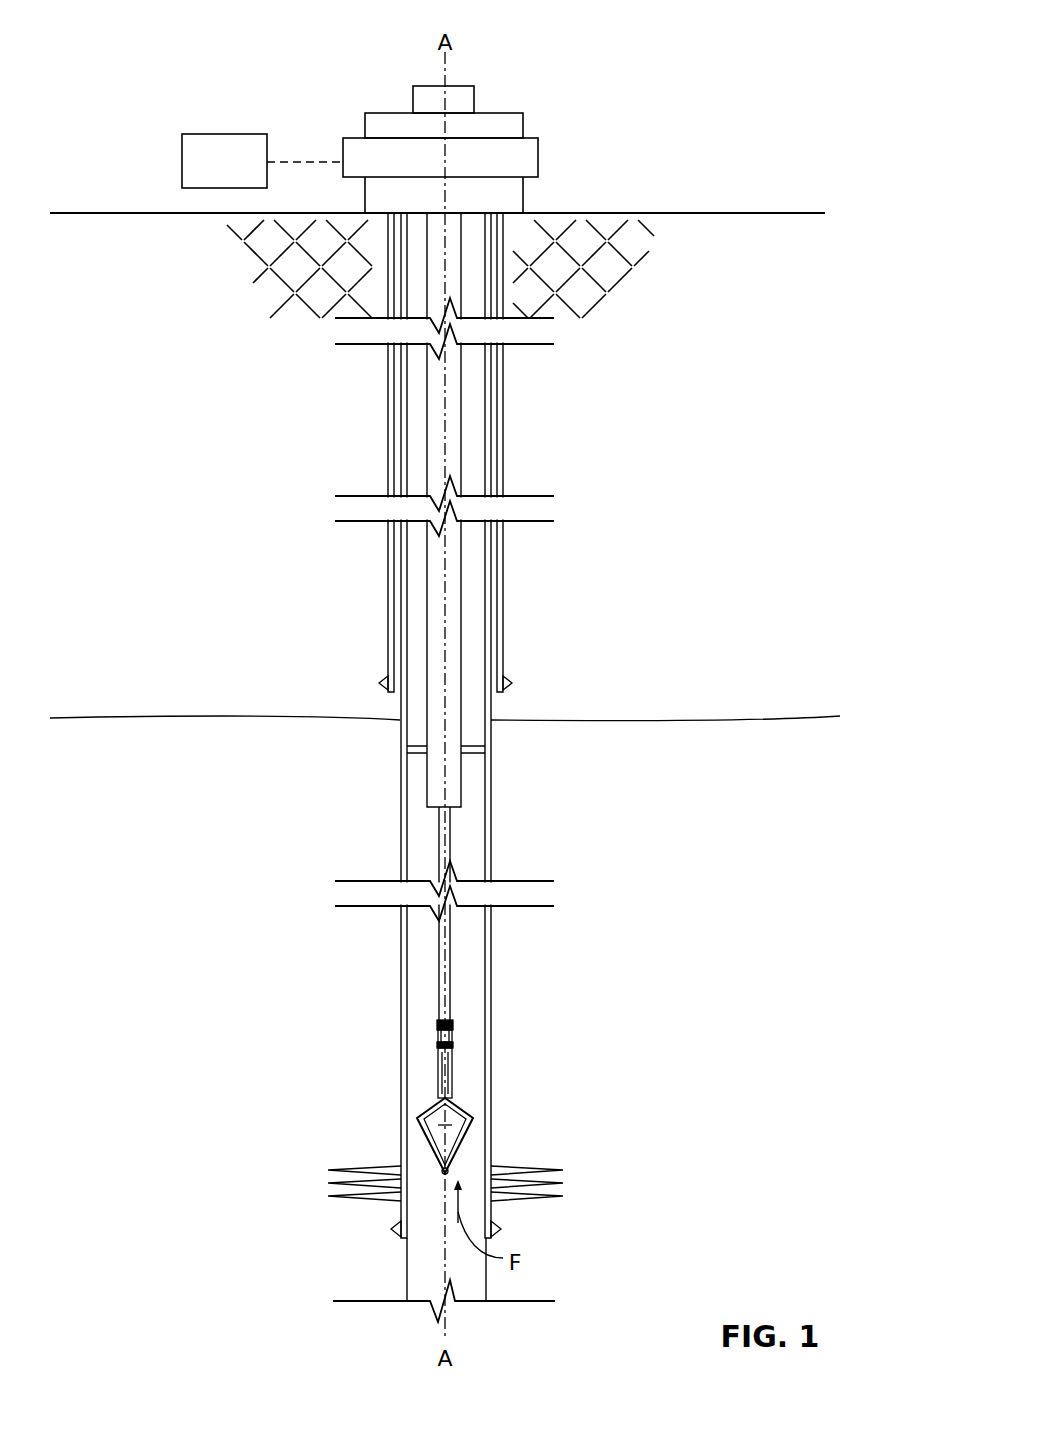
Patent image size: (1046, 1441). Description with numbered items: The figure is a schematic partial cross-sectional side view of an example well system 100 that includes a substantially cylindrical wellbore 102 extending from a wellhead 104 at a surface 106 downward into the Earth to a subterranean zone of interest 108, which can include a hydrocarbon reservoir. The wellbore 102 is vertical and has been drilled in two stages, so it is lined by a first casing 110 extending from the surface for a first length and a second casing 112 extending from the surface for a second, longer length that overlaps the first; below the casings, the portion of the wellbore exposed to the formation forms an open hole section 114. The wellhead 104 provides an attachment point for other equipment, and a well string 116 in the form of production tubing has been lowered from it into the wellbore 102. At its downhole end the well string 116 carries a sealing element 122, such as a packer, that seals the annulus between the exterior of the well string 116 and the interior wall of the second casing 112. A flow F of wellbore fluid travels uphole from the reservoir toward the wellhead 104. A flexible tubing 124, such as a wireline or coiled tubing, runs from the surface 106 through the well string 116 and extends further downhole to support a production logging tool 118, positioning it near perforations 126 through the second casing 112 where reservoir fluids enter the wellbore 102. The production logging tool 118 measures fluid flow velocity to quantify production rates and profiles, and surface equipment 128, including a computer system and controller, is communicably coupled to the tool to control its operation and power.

The well system 100 is at (780, 30).
The wellbore 102 is at (426, 478).
The wellhead 104 is at (503, 112).
The surface 106 is at (755, 213).
The subterranean zone of interest 108 is at (787, 808).
The first casing 110 is at (504, 555).
The second casing 112 is at (398, 768).
The open hole section 114 is at (405, 1255).
The well string 116 is at (470, 722).
The production logging tool 118 is at (472, 1090).
The sealing element 122 is at (470, 754).
The flexible tubing 124 is at (452, 962).
The perforations 126 is at (580, 1181).
The surface equipment 128 is at (262, 161).